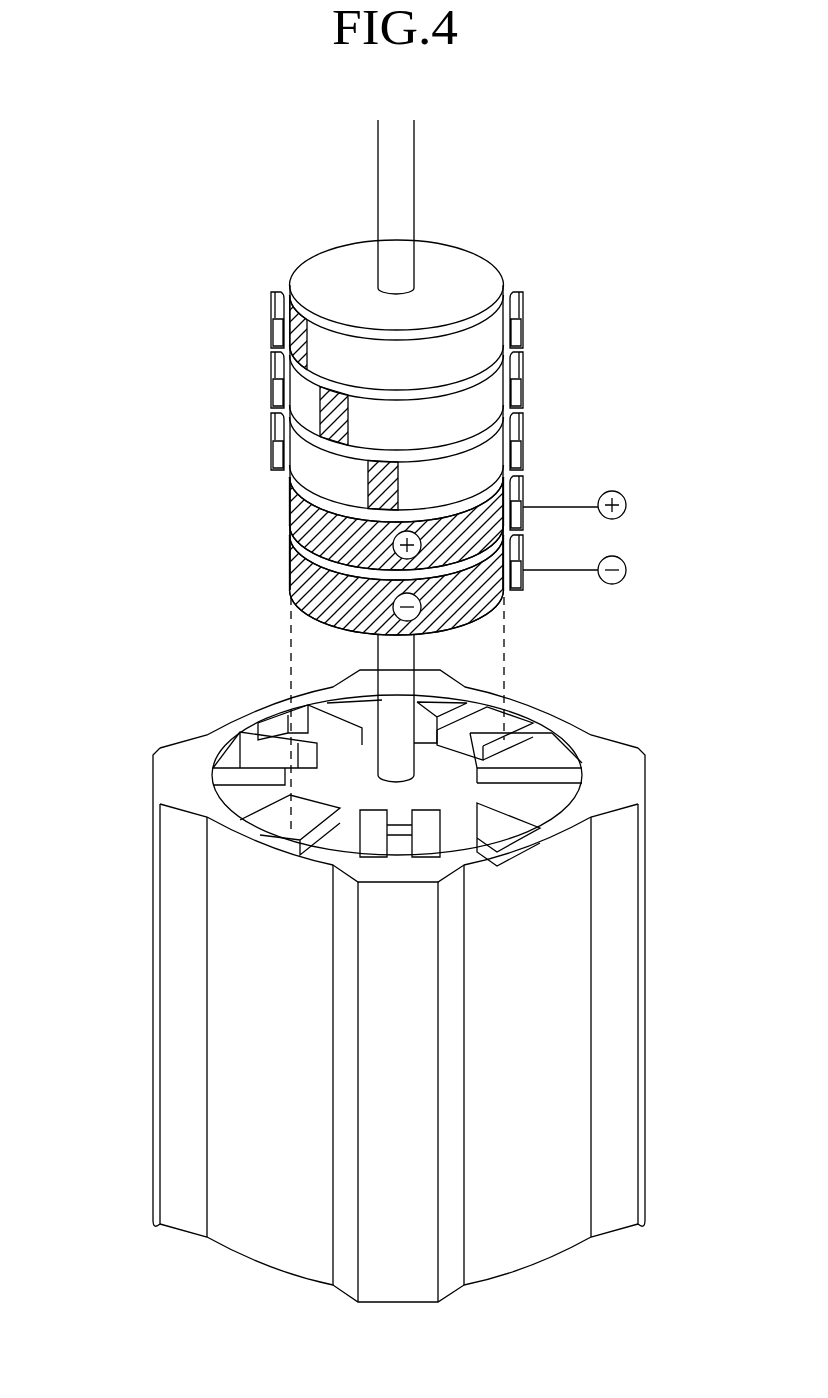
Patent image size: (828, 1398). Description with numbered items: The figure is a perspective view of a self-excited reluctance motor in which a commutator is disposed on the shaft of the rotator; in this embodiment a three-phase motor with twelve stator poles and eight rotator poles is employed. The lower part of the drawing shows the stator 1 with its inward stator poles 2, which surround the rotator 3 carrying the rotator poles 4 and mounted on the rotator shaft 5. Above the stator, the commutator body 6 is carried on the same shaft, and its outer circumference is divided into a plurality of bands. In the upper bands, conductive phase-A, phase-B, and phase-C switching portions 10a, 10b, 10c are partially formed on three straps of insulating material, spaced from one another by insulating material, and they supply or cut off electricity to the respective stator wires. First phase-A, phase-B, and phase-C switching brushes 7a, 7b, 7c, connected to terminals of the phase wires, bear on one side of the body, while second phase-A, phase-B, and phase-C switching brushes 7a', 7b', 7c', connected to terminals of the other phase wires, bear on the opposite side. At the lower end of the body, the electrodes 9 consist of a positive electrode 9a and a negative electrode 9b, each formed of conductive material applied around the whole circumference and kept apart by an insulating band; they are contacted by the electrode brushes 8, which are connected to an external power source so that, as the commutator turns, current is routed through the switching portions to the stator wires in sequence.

The stator 1 is at (180, 775).
The stator pole 2 is at (280, 815).
The rotator 3 is at (420, 772).
The rotator pole 4 is at (485, 775).
The rotator shaft 5 is at (405, 157).
The commutator body 6 is at (470, 285).
The first phase-A switching brush 7a is at (220, 320).
The first phase-B switching brush 7b is at (220, 380).
The first phase-C switching brush 7c is at (220, 441).
The second phase-A switching brush 7a' is at (574, 320).
The second phase-B switching brush 7b' is at (574, 380).
The second phase-C switching brush 7c' is at (573, 441).
The electrode brushes 8 is at (524, 568).
The electrodes 9 is at (152, 505).
The positive electrode 9a is at (298, 518).
The negative electrode 9b is at (298, 583).
The phase-A switching portion 10a is at (300, 312).
The phase-B switching portion 10b is at (338, 410).
The phase-C switching portion 10c is at (400, 485).